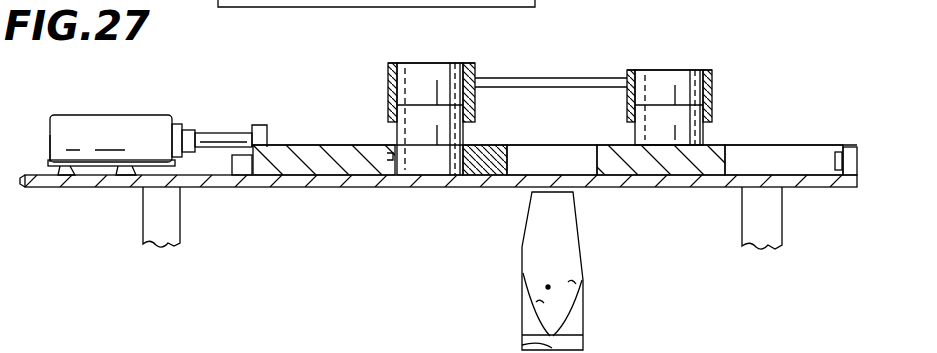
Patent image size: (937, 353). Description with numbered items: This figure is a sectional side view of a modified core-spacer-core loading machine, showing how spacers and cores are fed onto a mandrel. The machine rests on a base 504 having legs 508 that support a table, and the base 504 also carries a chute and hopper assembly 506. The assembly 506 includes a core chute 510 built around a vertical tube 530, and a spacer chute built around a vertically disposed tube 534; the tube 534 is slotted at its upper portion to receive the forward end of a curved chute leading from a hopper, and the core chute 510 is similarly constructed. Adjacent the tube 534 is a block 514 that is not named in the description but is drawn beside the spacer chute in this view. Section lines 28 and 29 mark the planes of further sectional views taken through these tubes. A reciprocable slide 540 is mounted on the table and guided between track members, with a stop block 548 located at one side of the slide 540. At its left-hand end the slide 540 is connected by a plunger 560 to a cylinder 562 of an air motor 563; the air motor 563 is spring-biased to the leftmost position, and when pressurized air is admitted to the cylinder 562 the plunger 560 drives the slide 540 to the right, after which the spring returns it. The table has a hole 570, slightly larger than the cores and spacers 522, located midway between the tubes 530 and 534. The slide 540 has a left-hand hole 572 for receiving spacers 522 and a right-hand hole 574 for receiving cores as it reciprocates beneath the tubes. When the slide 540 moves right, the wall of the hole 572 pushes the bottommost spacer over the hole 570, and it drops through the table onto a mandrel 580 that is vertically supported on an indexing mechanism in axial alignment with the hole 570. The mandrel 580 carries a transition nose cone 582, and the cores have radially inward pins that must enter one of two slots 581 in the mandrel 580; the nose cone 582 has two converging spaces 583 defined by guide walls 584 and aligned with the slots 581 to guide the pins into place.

The section line 28— 28 is at (430, 28).
The section line 29— 29 is at (7, 161).
The base 504 is at (150, 212).
The chute and hopper assembly 506 is at (622, 98).
The legs 508 is at (175, 220).
The core chute 510 is at (710, 74).
The right bearing block of center cylinder 514 is at (470, 70).
The spacers 522 is at (400, 140).
The vertical tube 530 is at (712, 99).
The vertically disposed tube 534 is at (392, 73).
The reciprocable slide 540 is at (290, 147).
The stop block 548 is at (843, 148).
The plunger 560 is at (210, 137).
The cylinder 562 is at (65, 127).
The air motor 563 is at (155, 123).
The hole 570 is at (605, 178).
The left-hand hole 572 is at (387, 160).
The right-hand hole 574 is at (520, 172).
The mandrel 580 is at (580, 346).
The slots 581 is at (548, 345).
The transition nose cone 582 is at (565, 240).
The converging spaces 583 is at (546, 286).
The guide walls 584 is at (538, 304).